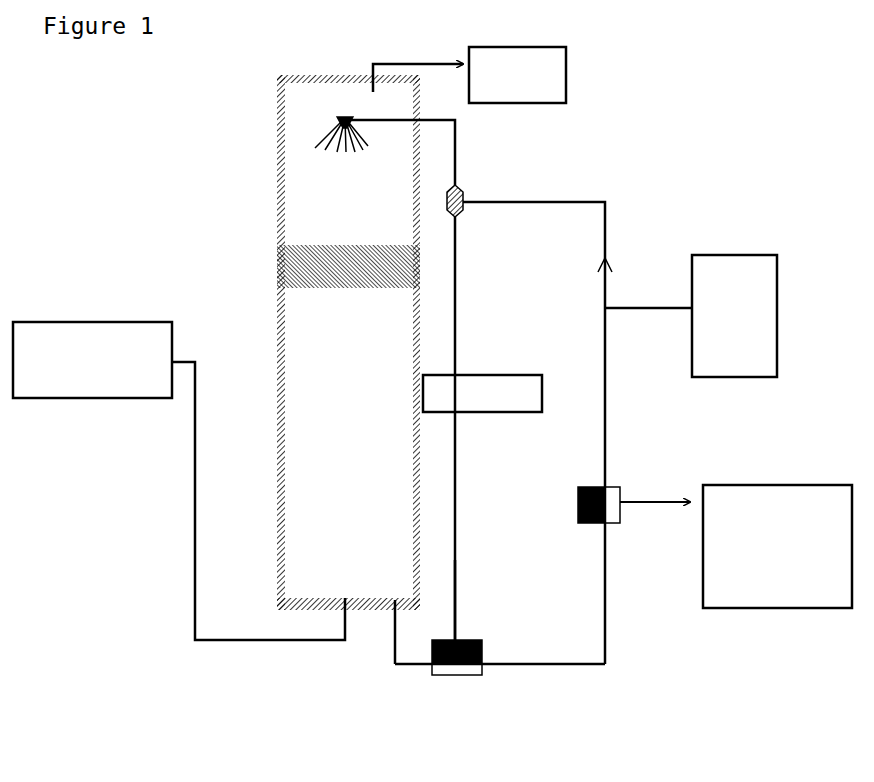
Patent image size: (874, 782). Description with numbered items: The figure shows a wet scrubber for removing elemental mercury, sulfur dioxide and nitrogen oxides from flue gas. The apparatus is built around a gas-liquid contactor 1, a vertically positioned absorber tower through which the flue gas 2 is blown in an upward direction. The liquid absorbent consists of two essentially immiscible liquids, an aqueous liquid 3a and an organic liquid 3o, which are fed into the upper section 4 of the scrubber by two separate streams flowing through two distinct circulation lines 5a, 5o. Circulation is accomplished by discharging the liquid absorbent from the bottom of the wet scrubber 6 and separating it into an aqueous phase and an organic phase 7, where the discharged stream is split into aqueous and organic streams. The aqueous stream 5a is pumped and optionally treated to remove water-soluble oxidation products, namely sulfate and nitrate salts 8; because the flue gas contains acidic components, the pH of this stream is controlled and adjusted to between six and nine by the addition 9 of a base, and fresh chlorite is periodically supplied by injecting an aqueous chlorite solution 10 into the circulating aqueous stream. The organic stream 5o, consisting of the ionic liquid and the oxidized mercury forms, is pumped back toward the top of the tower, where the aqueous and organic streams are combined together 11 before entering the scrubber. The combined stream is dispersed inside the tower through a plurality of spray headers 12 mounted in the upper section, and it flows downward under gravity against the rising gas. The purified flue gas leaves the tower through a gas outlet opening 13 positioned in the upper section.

The gas-liquid contactor 1 is at (331, 386).
The flue gas 2 is at (179, 466).
The aqueous liquid absorbent 3a is at (537, 410).
The organic liquid absorbent 3o is at (482, 428).
The upper section of the scrubber 4 is at (400, 152).
The aqueous circulation line 5a is at (550, 662).
The organic circulation line 5o is at (474, 600).
The bottom of the wet scrubber 6 is at (379, 615).
The phase separation 7 is at (487, 707).
The sulfate and nitrate salts 8 is at (777, 524).
The base addition 9 is at (584, 474).
The aqueous chlorite solution 10 is at (691, 296).
The combining of aqueous and organic streams 11 is at (490, 176).
The spray headers 12 is at (341, 157).
The gas outlet opening 13 is at (500, 75).